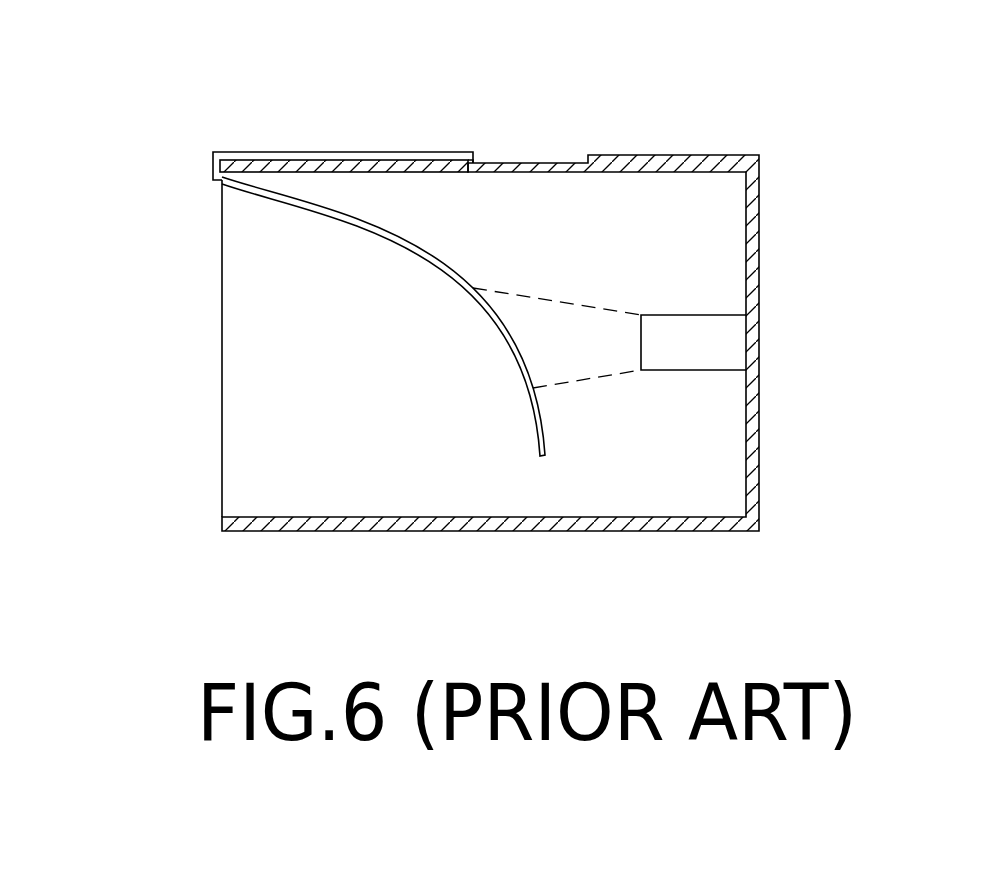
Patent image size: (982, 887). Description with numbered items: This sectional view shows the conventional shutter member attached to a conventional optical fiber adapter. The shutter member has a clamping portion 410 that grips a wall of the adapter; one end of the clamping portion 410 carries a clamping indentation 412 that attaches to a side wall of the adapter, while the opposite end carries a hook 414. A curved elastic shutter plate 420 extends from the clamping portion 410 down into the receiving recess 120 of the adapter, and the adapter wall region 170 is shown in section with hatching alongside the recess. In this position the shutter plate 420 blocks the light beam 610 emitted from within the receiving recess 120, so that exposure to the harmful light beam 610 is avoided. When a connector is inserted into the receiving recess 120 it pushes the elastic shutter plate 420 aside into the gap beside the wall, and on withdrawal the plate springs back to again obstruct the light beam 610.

The housing 170 is at (527, 160).
The receiving recess 120 is at (305, 372).
The clamping portion 410 is at (345, 155).
The clamping indentation 412 is at (214, 165).
The hook 414 is at (478, 160).
The curved elastic shutter plate 420 is at (402, 238).
The light beam 610 is at (558, 298).